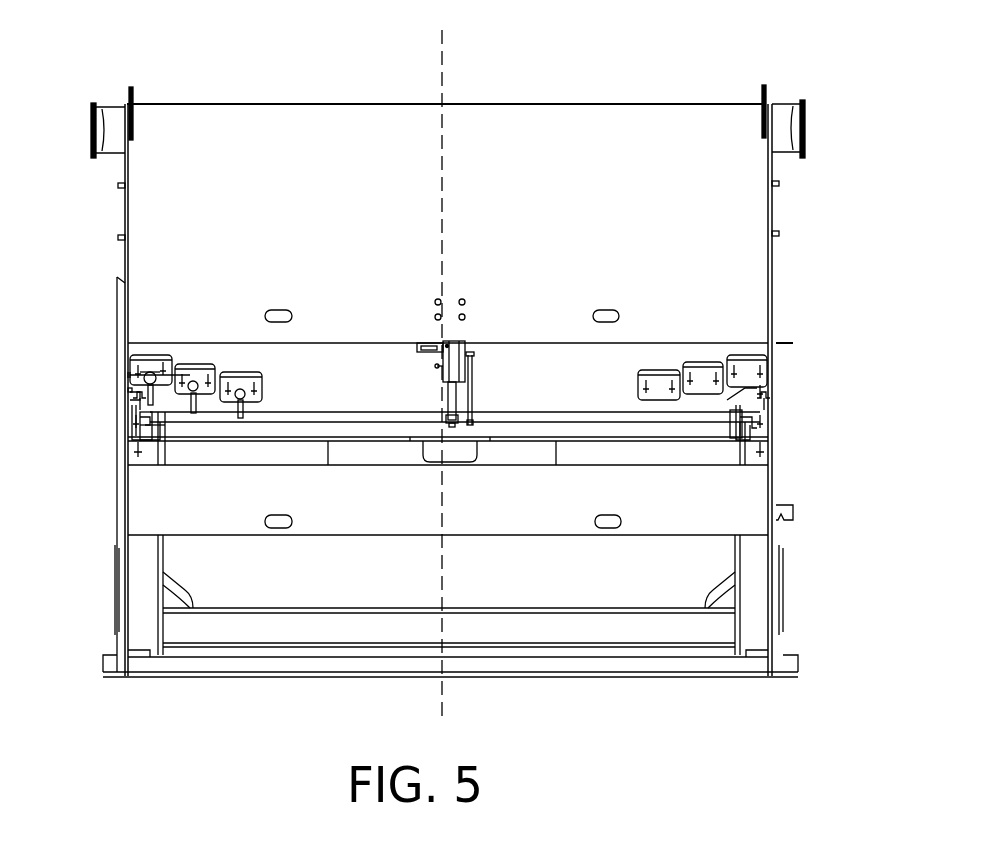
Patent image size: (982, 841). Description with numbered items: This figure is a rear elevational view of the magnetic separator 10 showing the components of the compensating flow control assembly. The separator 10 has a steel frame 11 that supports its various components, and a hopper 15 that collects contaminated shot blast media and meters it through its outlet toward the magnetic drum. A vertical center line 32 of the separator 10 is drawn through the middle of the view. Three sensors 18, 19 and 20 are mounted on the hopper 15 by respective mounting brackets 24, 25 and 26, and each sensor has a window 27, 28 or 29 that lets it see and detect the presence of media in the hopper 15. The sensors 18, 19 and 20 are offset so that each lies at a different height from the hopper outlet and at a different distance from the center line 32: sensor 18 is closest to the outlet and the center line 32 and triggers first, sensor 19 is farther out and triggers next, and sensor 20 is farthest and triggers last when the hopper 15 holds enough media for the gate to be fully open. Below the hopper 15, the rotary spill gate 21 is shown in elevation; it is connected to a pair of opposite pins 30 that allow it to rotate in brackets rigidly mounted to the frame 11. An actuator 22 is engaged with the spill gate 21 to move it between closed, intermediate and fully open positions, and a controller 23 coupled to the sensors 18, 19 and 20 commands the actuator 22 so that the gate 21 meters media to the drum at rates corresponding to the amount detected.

The magnetic separator 10 is at (318, 88).
The frame 11 is at (118, 522).
The hopper 15 is at (582, 357).
The sensor 18 is at (138, 450).
The sensor 19 is at (135, 428).
The sensor 20 is at (140, 385).
The rotary spill gate 21 is at (545, 422).
The actuator 22 is at (445, 380).
The controller 23 is at (480, 368).
The mounting bracket 24 is at (240, 387).
The mounting bracket 25 is at (130, 372).
The mounting bracket 26 is at (160, 368).
The window 27 is at (253, 373).
The window 28 is at (208, 357).
The window 29 is at (140, 365).
The pins 30 is at (135, 405).
The center line 32 is at (444, 172).